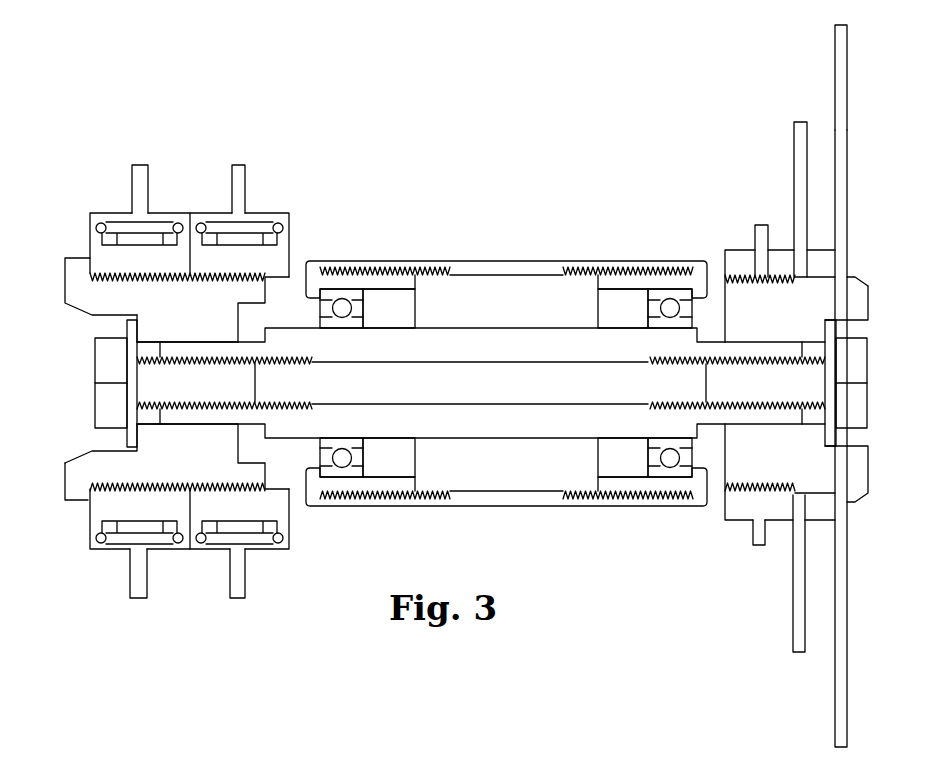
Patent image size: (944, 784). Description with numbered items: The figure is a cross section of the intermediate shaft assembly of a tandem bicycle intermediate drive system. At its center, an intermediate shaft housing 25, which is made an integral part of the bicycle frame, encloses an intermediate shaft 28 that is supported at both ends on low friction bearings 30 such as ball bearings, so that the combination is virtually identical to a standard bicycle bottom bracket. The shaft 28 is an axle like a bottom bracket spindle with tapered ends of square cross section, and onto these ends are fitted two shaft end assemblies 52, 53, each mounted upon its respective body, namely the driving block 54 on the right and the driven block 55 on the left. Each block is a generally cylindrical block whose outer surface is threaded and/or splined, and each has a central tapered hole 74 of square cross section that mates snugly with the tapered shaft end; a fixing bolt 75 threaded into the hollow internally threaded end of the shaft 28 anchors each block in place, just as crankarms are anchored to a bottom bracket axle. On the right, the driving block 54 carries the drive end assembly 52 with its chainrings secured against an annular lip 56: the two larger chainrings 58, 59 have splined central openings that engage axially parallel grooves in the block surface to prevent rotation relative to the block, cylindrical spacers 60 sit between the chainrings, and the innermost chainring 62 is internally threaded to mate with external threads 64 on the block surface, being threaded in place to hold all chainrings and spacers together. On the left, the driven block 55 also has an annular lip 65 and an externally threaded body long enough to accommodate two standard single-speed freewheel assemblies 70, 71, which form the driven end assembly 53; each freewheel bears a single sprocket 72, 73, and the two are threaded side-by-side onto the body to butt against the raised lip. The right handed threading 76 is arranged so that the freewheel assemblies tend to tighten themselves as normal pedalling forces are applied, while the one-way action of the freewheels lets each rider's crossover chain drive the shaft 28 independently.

The intermediate shaft housing 25 is at (590, 272).
The intermediate shaft 28 is at (403, 333).
The low friction bearings 30 is at (665, 288).
The shaft end assembly 52 is at (847, 148).
The shaft end assembly 53 is at (63, 277).
The driving block 54 is at (848, 297).
The driven block 55 is at (163, 322).
The annular lip 56 is at (857, 268).
The larger chainring 58 is at (840, 50).
The larger chainring 59 is at (801, 133).
The cylindrical spacers 60 is at (823, 262).
The innermost chainring 62 is at (738, 258).
The external threads 64 is at (743, 278).
The annular lip 65 is at (73, 498).
The single-speed freewheel assembly 70 is at (155, 222).
The single-speed freewheel assembly 71 is at (292, 230).
The sprocket 72 is at (138, 175).
The sprocket 73 is at (242, 175).
The central tapered hole 74 is at (192, 423).
The fixing bolt 75 is at (153, 392).
The right handed threading 76 is at (127, 482).